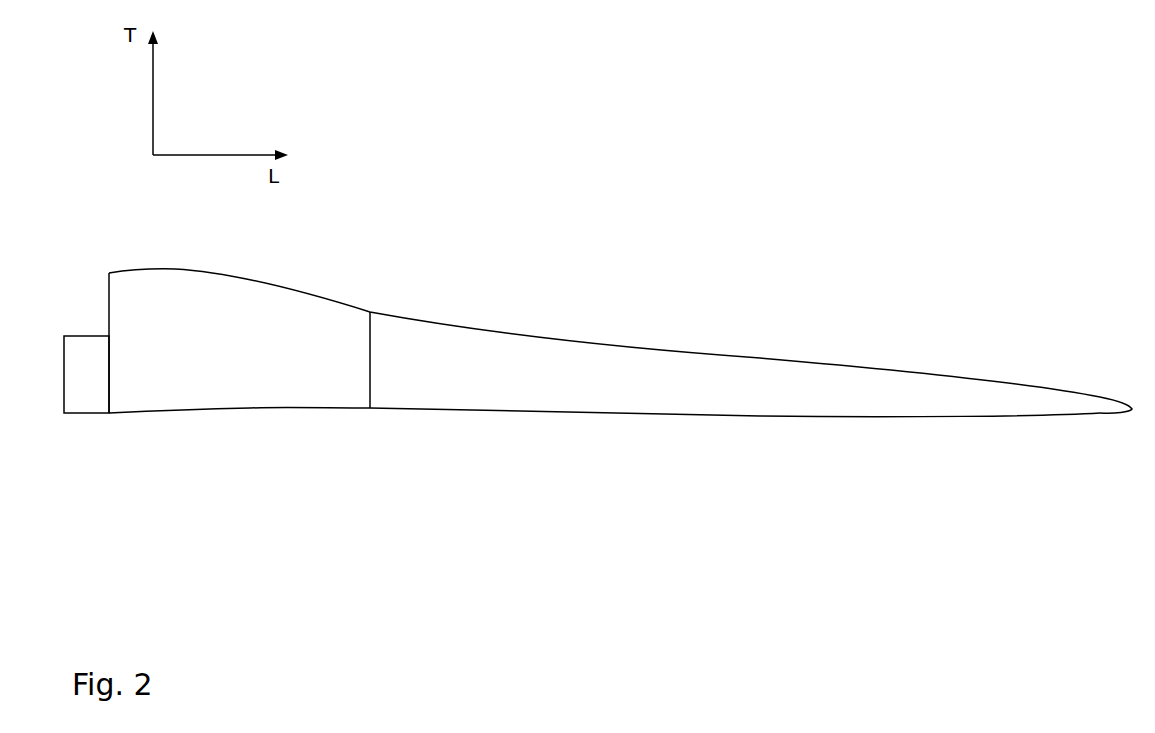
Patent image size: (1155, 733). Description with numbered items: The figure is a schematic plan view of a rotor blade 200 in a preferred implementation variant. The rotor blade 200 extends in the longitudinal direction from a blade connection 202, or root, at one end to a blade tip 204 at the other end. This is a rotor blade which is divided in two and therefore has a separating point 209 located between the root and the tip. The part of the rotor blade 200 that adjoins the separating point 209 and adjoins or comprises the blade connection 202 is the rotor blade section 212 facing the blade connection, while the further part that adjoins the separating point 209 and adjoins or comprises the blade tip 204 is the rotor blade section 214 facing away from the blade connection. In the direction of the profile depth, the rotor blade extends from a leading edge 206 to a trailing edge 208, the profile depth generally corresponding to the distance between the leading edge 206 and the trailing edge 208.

The rotor blade 200 is at (602, 334).
The blade connection 202 is at (83, 440).
The blade tip 204 is at (1135, 420).
The leading edge 206 is at (570, 422).
The trailing edge 208 is at (647, 336).
The separating point 209 is at (380, 366).
The rotor blade section facing the blade connection 212 is at (280, 382).
The rotor blade section facing away from the blade connection 214 is at (835, 393).